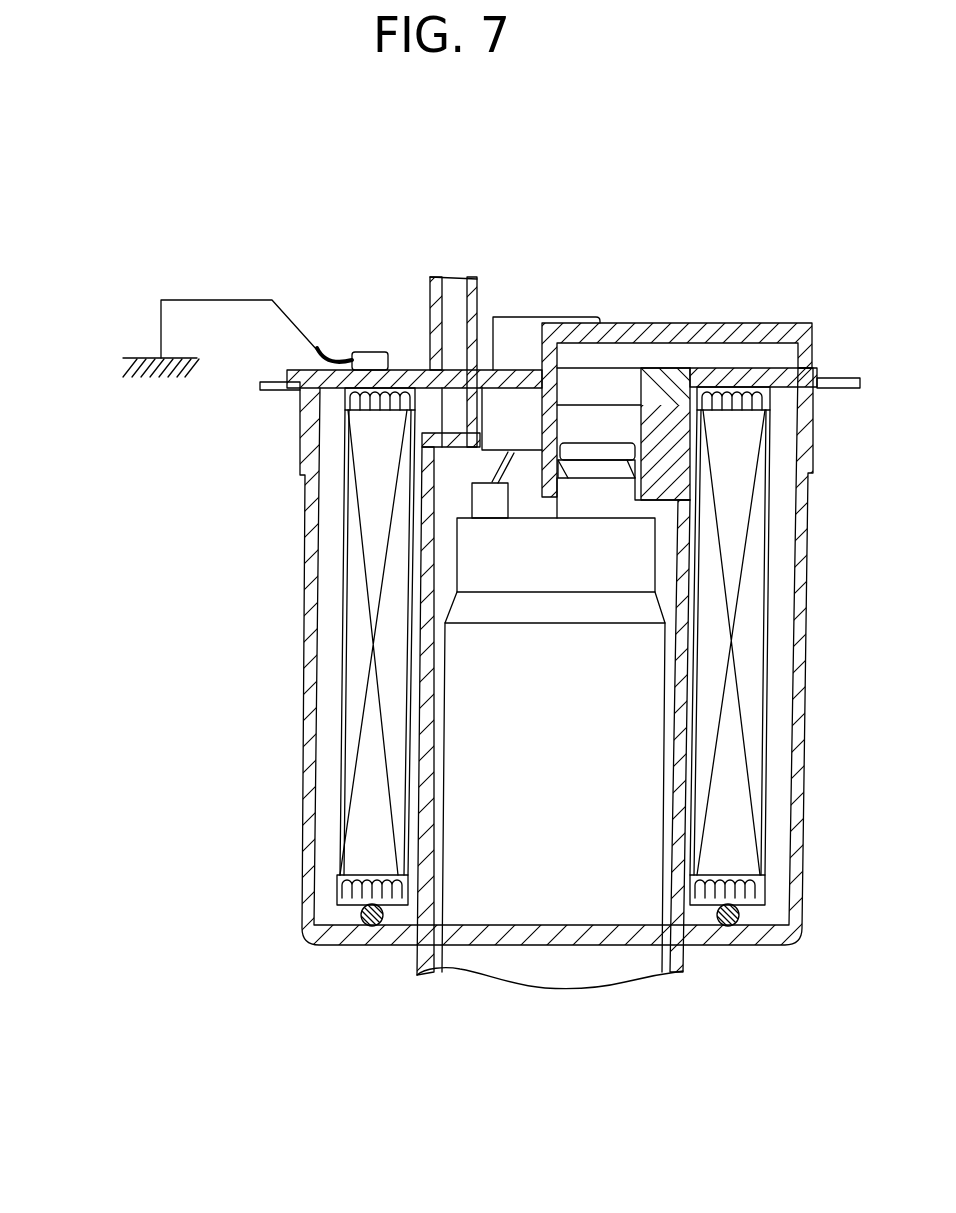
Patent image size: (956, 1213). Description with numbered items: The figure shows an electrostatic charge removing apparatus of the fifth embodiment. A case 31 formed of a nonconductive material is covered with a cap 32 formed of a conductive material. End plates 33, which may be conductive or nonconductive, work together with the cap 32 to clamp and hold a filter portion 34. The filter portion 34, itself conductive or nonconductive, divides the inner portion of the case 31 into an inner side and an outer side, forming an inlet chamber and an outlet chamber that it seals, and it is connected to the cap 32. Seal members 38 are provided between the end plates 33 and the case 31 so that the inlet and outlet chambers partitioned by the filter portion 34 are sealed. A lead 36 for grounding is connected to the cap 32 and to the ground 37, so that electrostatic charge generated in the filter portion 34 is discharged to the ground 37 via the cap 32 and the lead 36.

The case 31 is at (310, 590).
The cap 32 is at (513, 368).
The end plates 33 is at (342, 901).
The filter portion 34 is at (358, 676).
The lead 36 is at (338, 350).
The ground 37 is at (145, 373).
The seal members 38 is at (348, 943).